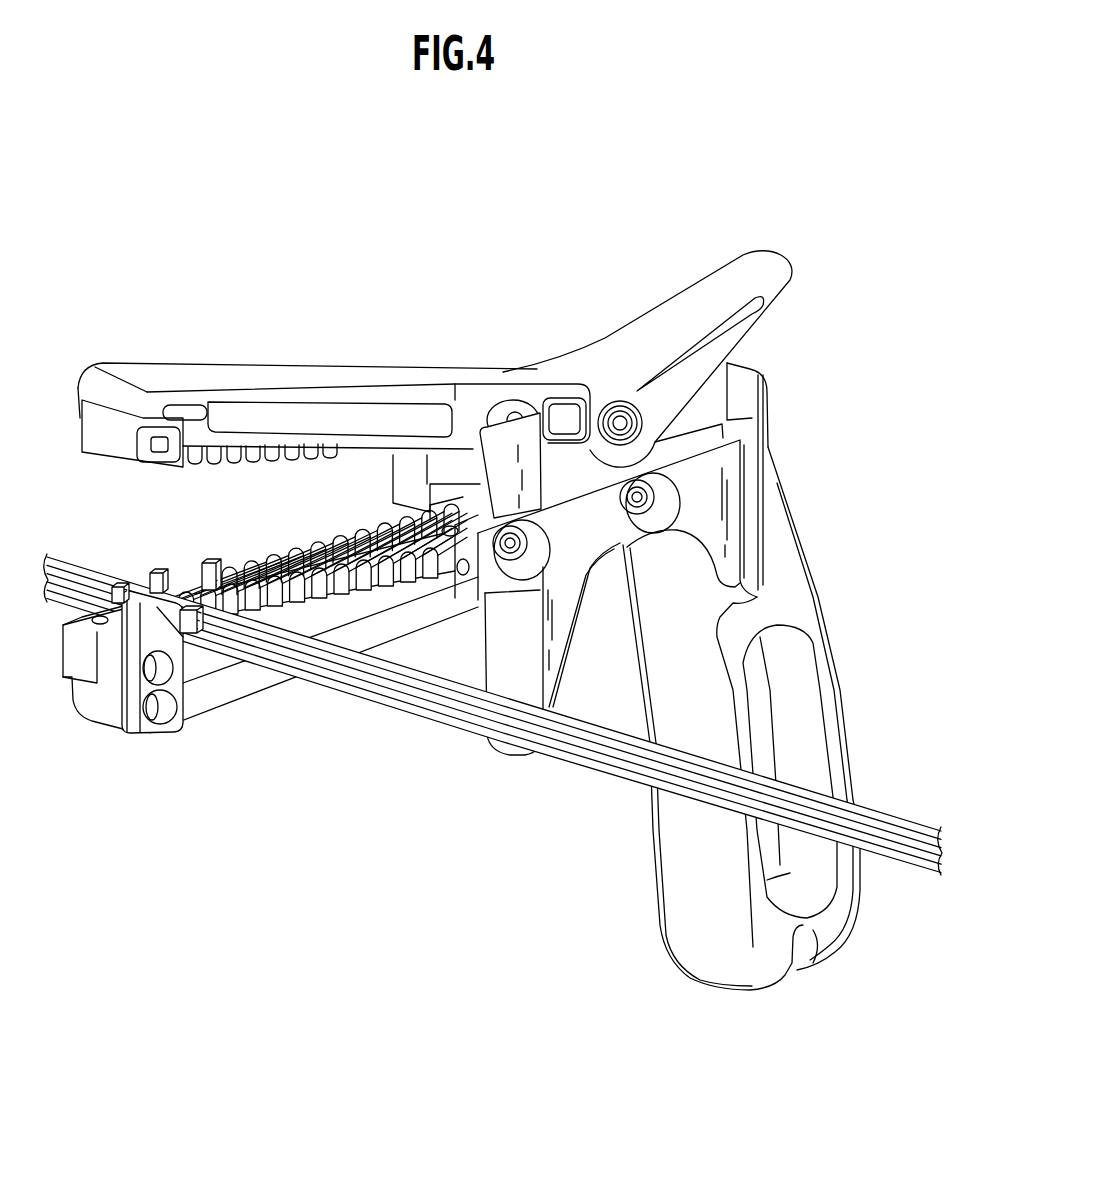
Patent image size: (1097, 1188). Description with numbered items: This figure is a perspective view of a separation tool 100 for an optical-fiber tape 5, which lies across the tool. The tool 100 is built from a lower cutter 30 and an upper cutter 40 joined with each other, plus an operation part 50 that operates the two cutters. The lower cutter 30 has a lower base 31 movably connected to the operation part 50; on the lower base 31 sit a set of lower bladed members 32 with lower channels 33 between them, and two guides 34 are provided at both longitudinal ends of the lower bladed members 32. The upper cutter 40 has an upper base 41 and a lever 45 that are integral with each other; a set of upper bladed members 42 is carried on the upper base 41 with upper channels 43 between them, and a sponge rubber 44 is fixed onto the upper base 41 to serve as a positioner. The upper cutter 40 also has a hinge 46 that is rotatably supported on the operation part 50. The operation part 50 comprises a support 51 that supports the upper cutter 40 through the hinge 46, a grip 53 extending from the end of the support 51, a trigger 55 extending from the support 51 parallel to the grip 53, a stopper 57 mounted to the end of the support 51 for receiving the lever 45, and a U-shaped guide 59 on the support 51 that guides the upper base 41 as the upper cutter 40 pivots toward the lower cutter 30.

The tool 100 is at (756, 136).
The upper cutter 40 is at (148, 308).
The upper base 41 is at (277, 367).
The upper bladed members 42 is at (197, 463).
The upper channels 43 is at (253, 463).
The sponge rubber 44 is at (233, 445).
The lever 45 is at (750, 270).
The hinge 46 is at (620, 401).
The U-shaped guide 59 is at (531, 410).
The operation part 50 is at (852, 562).
The support 51 is at (577, 480).
The grip 53 is at (853, 744).
The trigger 55 is at (508, 745).
The stopper 57 is at (755, 406).
The lower cutter 30 is at (178, 780).
The lower base 31 is at (260, 673).
The lower bladed members 32 is at (213, 565).
The lower channels 33 is at (220, 573).
The guides 34 is at (277, 583).
The ribbon cable 5 is at (367, 690).